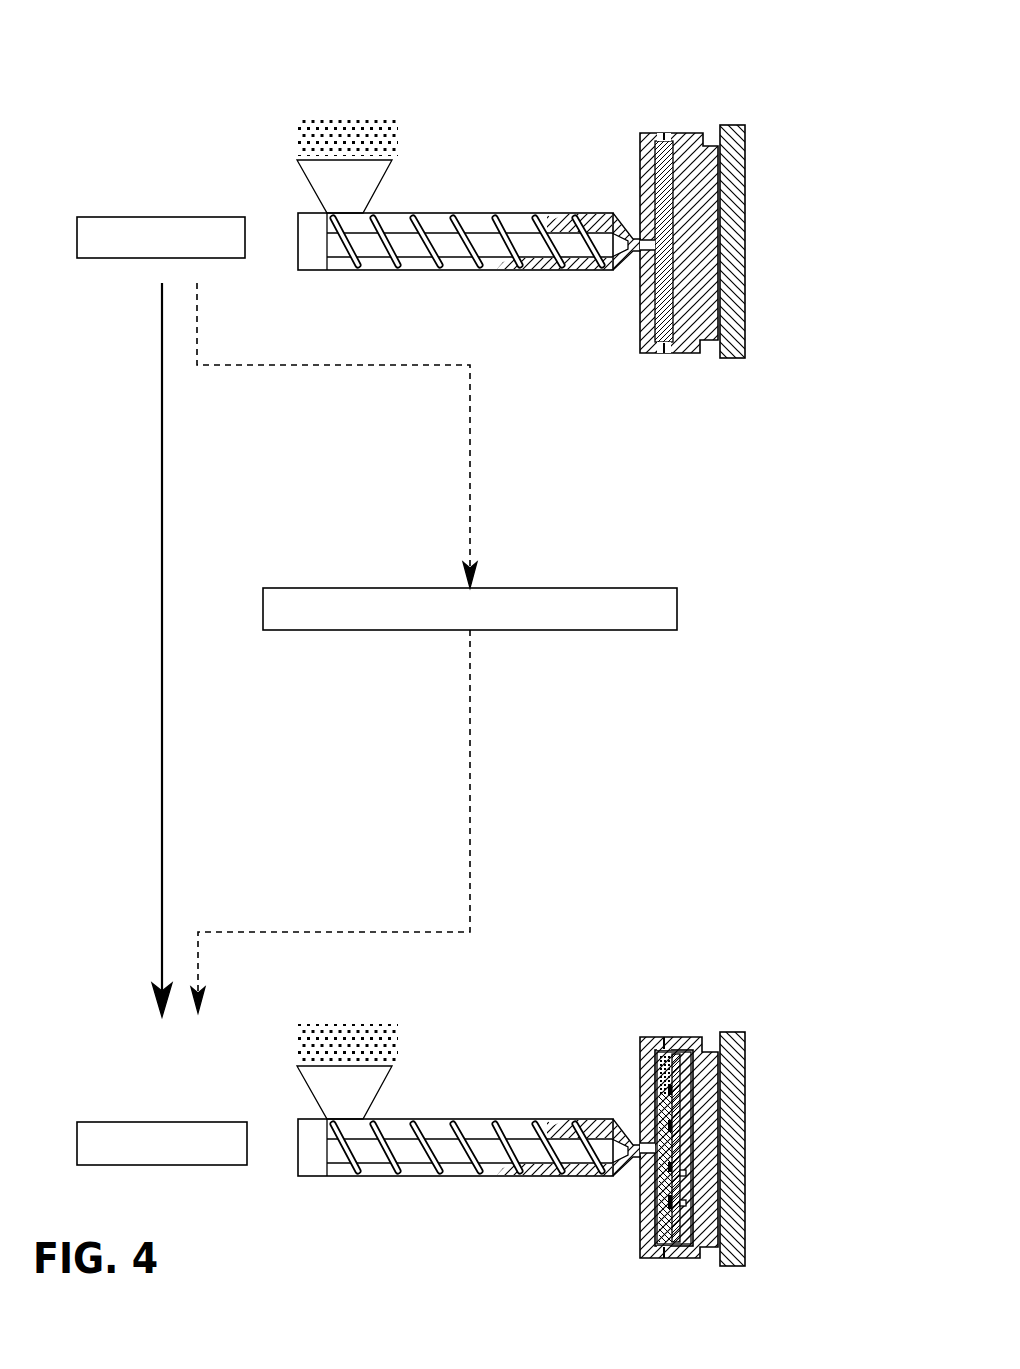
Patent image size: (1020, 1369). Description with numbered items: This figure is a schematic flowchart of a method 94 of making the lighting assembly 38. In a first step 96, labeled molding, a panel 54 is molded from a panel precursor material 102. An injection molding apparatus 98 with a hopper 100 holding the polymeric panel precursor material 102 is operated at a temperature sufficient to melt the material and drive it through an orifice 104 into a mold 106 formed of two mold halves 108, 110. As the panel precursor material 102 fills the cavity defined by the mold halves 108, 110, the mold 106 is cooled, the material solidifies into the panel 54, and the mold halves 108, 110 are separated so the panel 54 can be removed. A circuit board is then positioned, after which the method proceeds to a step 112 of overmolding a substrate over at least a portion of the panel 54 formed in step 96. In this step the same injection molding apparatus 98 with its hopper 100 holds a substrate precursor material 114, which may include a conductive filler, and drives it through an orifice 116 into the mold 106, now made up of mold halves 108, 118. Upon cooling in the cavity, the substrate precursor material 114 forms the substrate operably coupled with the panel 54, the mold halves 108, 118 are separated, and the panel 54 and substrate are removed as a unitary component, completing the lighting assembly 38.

The method 94 is at (514, 85).
The step 96 is at (141, 217).
The injection molding apparatus 98 is at (437, 213).
The hopper 100 is at (385, 178).
The panel precursor material 102 is at (578, 271).
The orifice 104 is at (644, 238).
The mold 106 is at (710, 141).
The mold half 108 is at (683, 133).
The mold half 110 is at (649, 133).
The step 112 is at (150, 1122).
The substrate precursor material 114 is at (680, 610).
The orifice 116 is at (641, 1140).
The mold half 118 is at (650, 1037).
The panel 54 is at (677, 268).
The lighting assembly 38 is at (690, 1127).